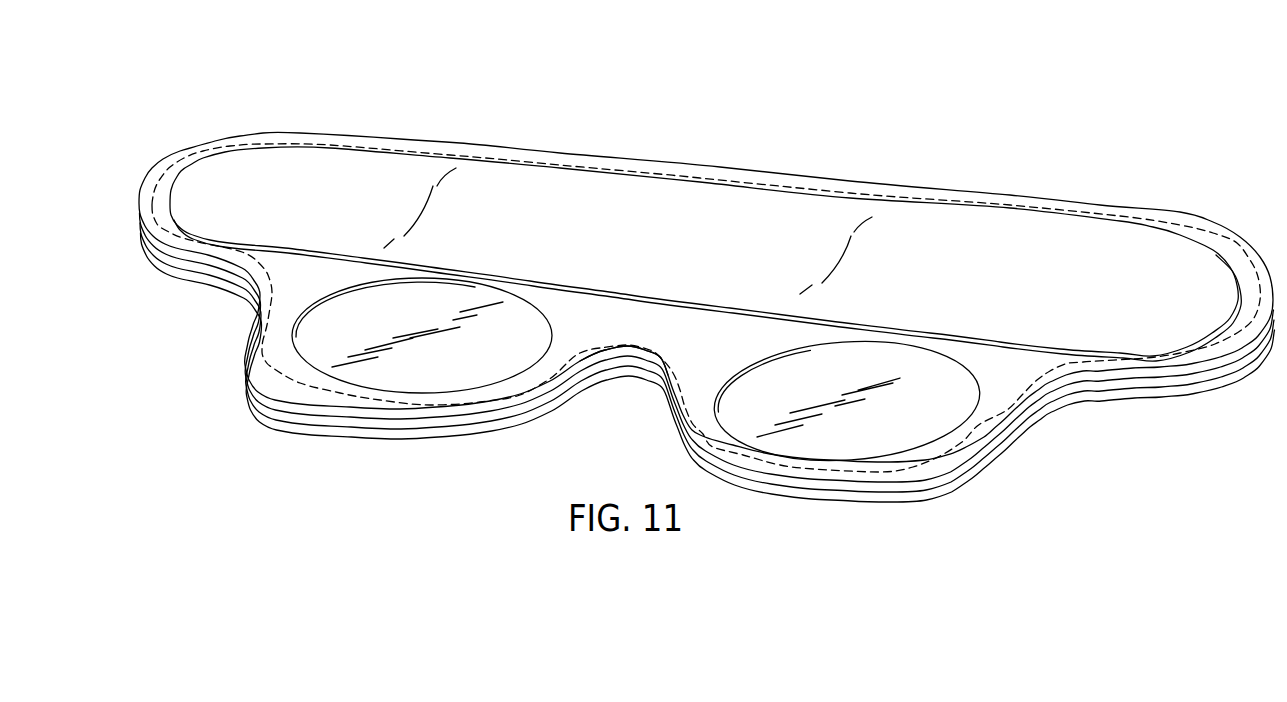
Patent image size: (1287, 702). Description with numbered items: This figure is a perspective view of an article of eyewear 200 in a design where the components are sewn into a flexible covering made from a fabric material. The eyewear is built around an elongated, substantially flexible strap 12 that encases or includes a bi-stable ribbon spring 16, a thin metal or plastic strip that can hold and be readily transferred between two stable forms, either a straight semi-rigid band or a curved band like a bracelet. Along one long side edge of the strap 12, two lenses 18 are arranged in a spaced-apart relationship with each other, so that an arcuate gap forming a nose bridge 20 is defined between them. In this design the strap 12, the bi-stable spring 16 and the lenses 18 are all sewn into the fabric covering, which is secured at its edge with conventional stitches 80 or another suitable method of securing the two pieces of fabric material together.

The elongated flexible strap 12 is at (1102, 210).
The bi-stable ribbon spring 16 is at (386, 165).
The lenses 18 is at (400, 383).
The nose bridge 20 is at (632, 380).
The stitches 80 is at (1029, 395).
The article of eyewear 200 is at (828, 157).